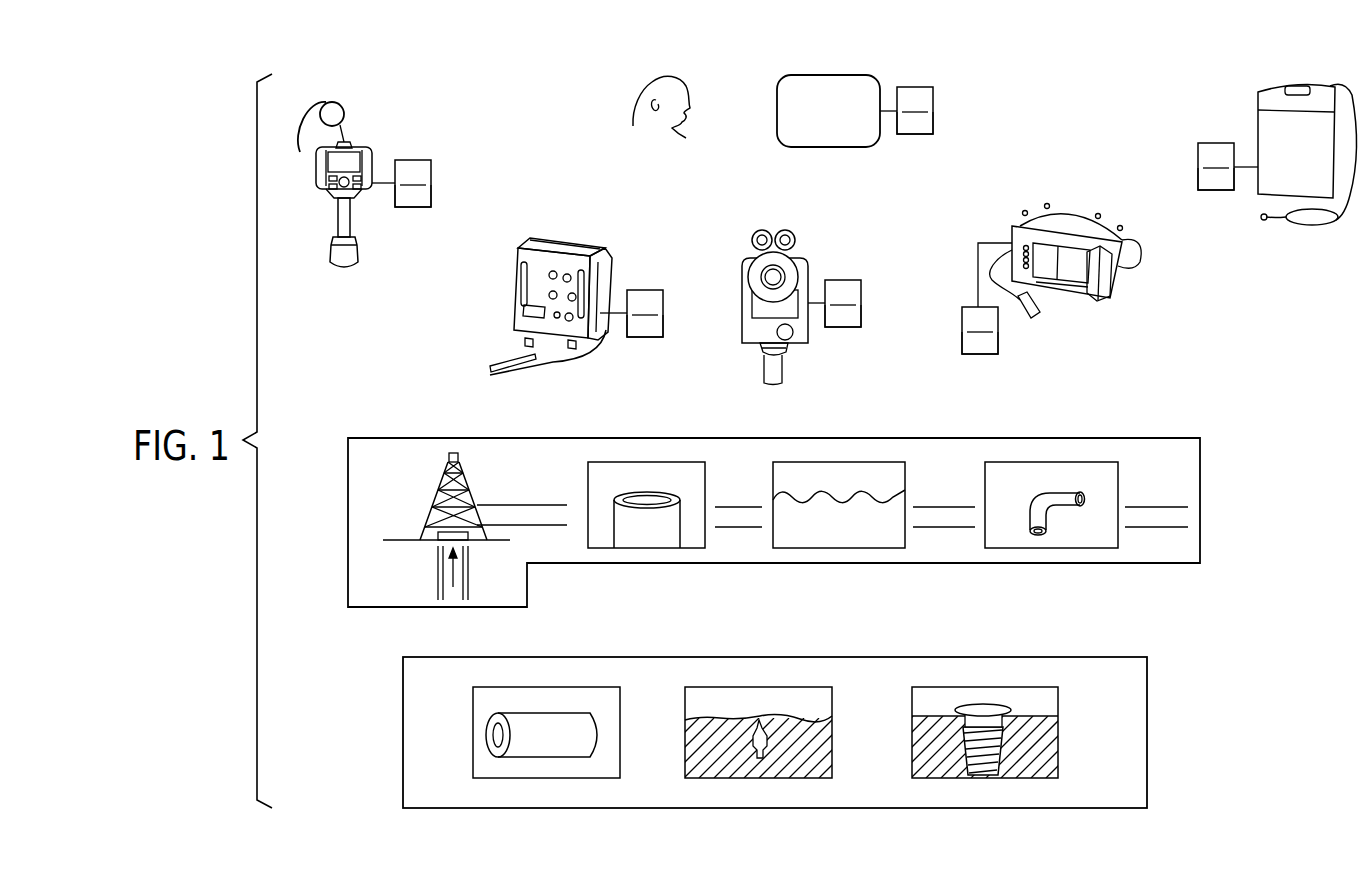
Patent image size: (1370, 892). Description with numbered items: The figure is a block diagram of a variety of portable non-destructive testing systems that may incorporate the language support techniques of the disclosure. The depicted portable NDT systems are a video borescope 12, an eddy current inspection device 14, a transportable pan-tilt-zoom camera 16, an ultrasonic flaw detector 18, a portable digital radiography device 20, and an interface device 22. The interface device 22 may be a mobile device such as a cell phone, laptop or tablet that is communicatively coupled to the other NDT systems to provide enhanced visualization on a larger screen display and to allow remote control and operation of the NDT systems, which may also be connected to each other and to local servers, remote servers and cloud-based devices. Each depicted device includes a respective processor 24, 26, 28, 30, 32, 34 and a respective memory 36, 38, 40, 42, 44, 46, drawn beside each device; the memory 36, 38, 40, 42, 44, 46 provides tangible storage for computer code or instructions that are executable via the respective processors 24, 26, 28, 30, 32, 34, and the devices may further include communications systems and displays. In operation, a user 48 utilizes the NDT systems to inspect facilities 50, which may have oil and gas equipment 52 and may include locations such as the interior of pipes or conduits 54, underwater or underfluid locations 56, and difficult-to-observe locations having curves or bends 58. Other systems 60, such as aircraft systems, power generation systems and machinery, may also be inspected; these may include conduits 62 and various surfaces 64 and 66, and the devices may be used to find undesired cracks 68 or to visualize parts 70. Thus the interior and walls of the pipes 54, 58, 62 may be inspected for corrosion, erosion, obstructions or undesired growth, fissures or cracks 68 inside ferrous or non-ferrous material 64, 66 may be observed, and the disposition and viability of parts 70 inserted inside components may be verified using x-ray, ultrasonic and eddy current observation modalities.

The video borescope 12 is at (330, 266).
The eddy current inspection device 14 is at (540, 238).
The transportable pan-tilt-zoom (PTZ) camera 16 is at (742, 262).
The ultrasonic flaw detector 18 is at (1106, 232).
The portable digital radiography device 20 is at (1298, 83).
The interface device 22 is at (777, 110).
The processor 24 is at (413, 160).
The processor 26 is at (645, 290).
The processor 28 is at (843, 280).
The processor 30 is at (968, 307).
The processor 32 is at (1214, 143).
The processor 34 is at (915, 87).
The memory 36 is at (413, 207).
The memory 38 is at (645, 337).
The memory 40 is at (843, 327).
The memory 42 is at (970, 354).
The memory 44 is at (1213, 190).
The memory 46 is at (915, 134).
The user 48 is at (656, 76).
The facilities 50 is at (1200, 502).
The oil and gas equipment 52 is at (405, 498).
The pipes or conduits 54 is at (705, 483).
The underwater (or underfluid) locations 56 is at (905, 483).
The locations having curves or bends 58 is at (1118, 483).
The other systems 60 is at (1147, 735).
The conduits 62 is at (620, 732).
The surface 64 is at (751, 732).
The surface 66 is at (979, 716).
The cracks 68 is at (759, 720).
The parts 70 is at (984, 706).